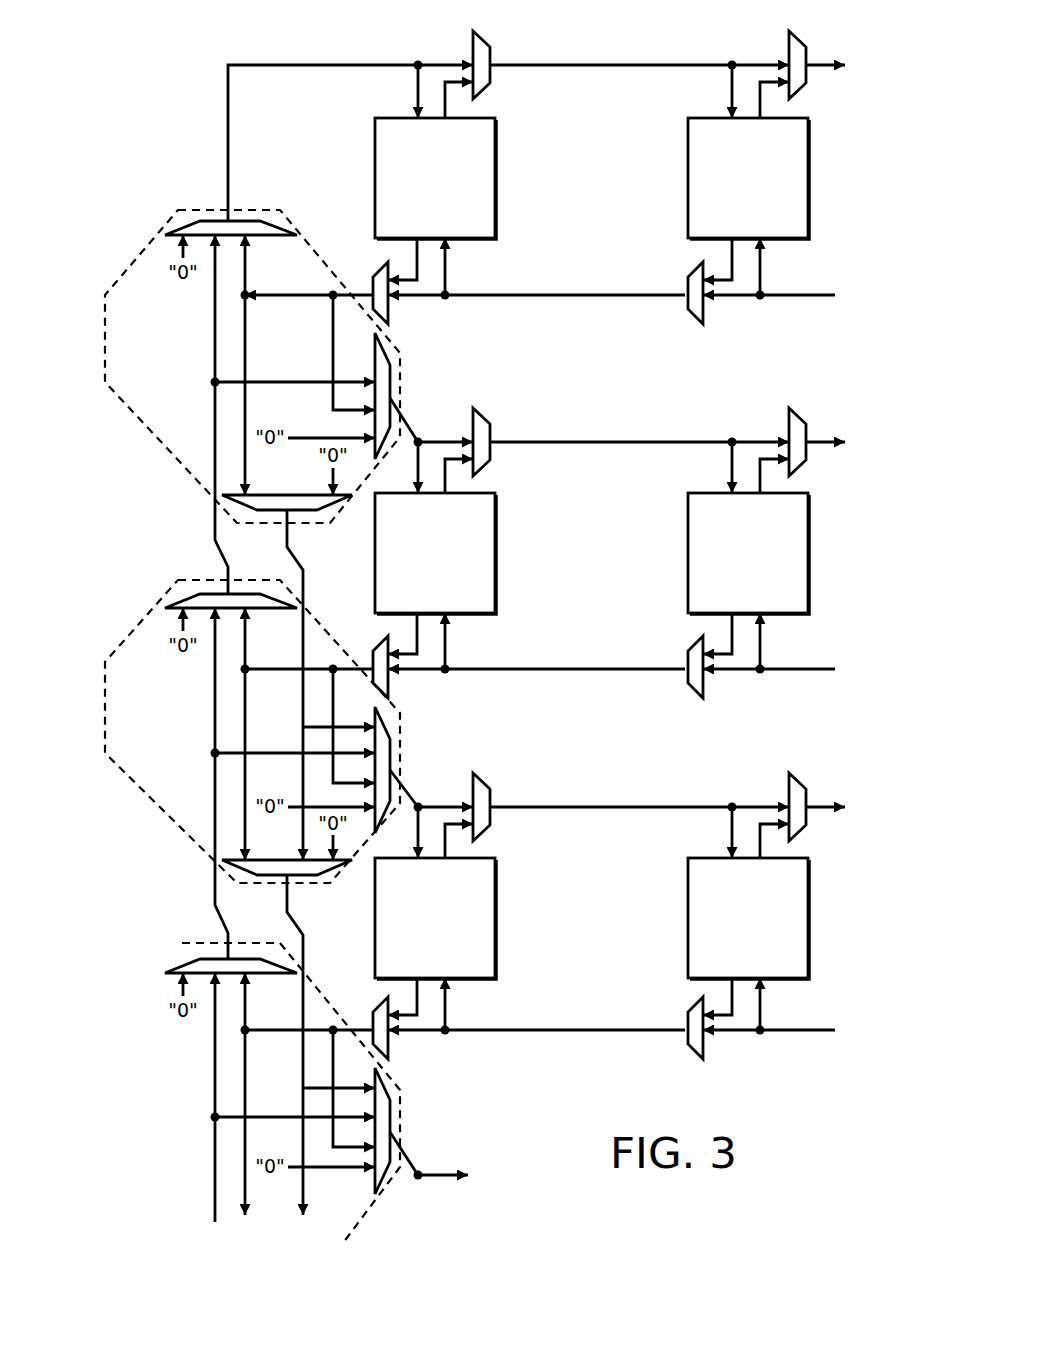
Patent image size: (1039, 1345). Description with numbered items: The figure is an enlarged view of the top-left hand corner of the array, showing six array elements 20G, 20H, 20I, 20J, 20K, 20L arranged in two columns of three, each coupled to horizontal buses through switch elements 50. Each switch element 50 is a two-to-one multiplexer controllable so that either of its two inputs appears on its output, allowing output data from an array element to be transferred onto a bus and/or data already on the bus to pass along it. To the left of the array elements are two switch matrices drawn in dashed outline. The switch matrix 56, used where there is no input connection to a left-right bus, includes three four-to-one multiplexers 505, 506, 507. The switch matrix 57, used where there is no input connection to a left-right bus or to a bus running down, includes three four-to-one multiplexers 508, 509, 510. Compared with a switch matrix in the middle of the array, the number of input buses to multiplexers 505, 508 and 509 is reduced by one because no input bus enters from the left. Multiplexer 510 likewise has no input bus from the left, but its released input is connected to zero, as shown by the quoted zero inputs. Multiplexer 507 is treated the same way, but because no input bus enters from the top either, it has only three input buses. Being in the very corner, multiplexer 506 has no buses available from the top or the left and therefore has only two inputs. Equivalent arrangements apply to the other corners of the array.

The switch element 50 is at (481, 36).
The array element 20G is at (435, 178).
The array element 20H is at (748, 178).
The array element 20I is at (435, 553).
The array element 20J is at (748, 553).
The array element 20K is at (435, 918).
The array element 20L is at (748, 918).
The 4:1 multiplexer 505 is at (207, 222).
The 4:1 multiplexer 506 is at (307, 511).
The 4:1 multiplexer 507 is at (392, 398).
The 4:1 multiplexer 508 is at (200, 592).
The 4:1 multiplexer 509 is at (307, 876).
The 4:1 multiplexer 510 is at (392, 768).
The switch matrix 56 is at (105, 340).
The switch matrix 57 is at (105, 712).